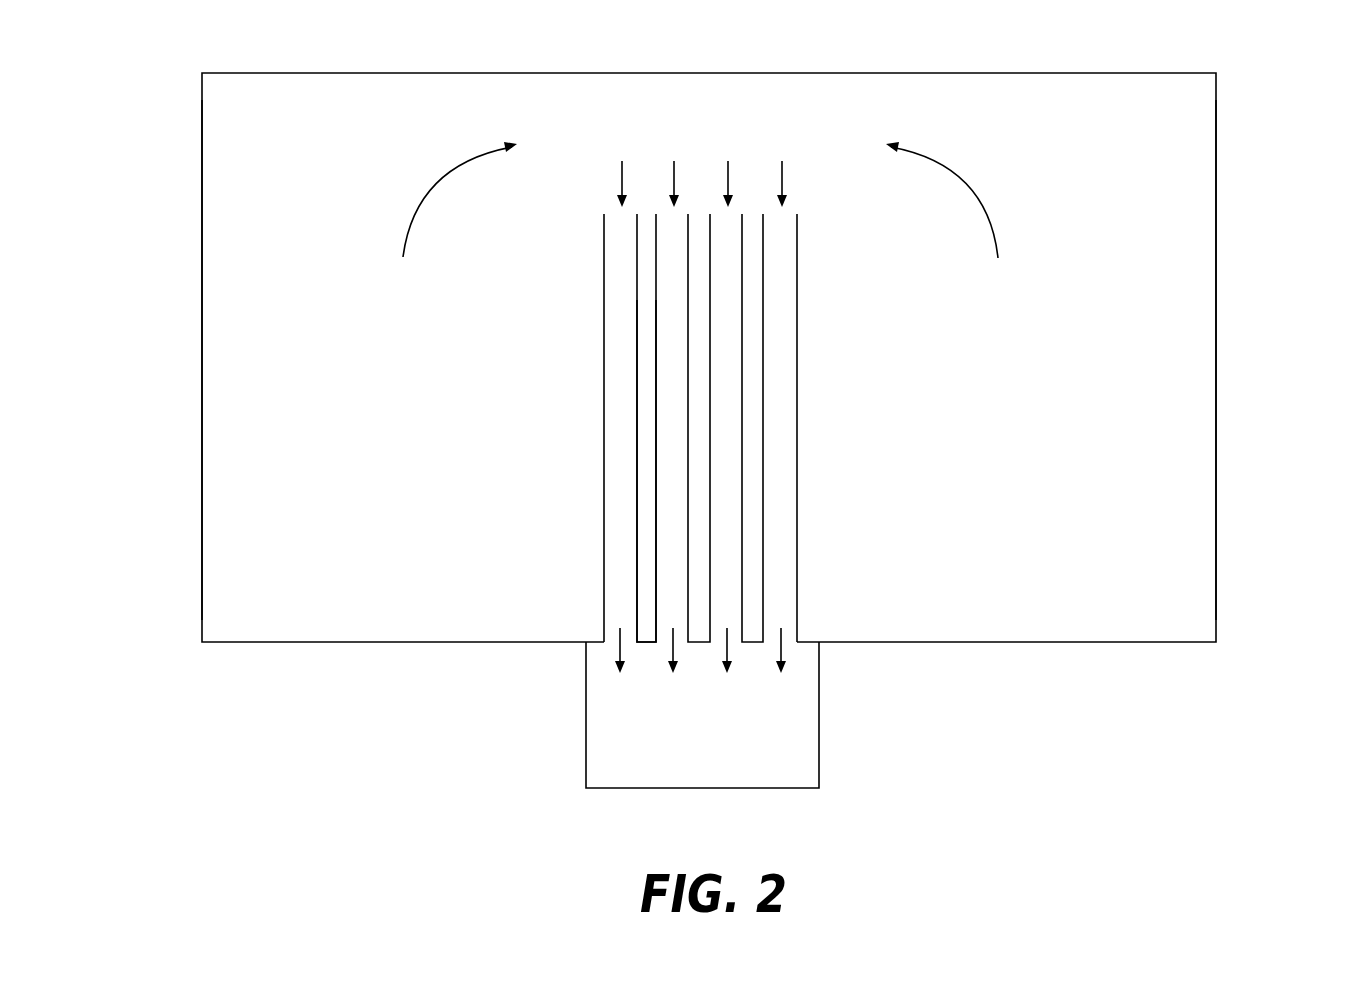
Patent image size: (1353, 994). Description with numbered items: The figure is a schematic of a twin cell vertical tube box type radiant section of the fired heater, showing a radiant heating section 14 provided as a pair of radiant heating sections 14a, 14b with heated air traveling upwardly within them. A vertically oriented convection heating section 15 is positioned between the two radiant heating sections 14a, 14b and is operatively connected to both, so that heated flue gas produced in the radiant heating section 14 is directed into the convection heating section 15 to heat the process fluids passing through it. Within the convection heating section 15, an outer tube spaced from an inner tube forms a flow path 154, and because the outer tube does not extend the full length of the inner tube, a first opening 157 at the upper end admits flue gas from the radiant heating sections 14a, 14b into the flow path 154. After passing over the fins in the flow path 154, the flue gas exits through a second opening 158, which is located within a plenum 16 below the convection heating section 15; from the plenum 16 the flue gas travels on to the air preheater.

The radiant heating section 14 is at (1232, 75).
The first radiant heating section 14a is at (237, 298).
The second radiant heating section 14b is at (1164, 269).
The convection heating section 15 is at (705, 135).
The first opening 157 is at (614, 210).
The flow path 154 is at (618, 567).
The second opening 158 is at (612, 643).
The plenum 16 is at (733, 767).